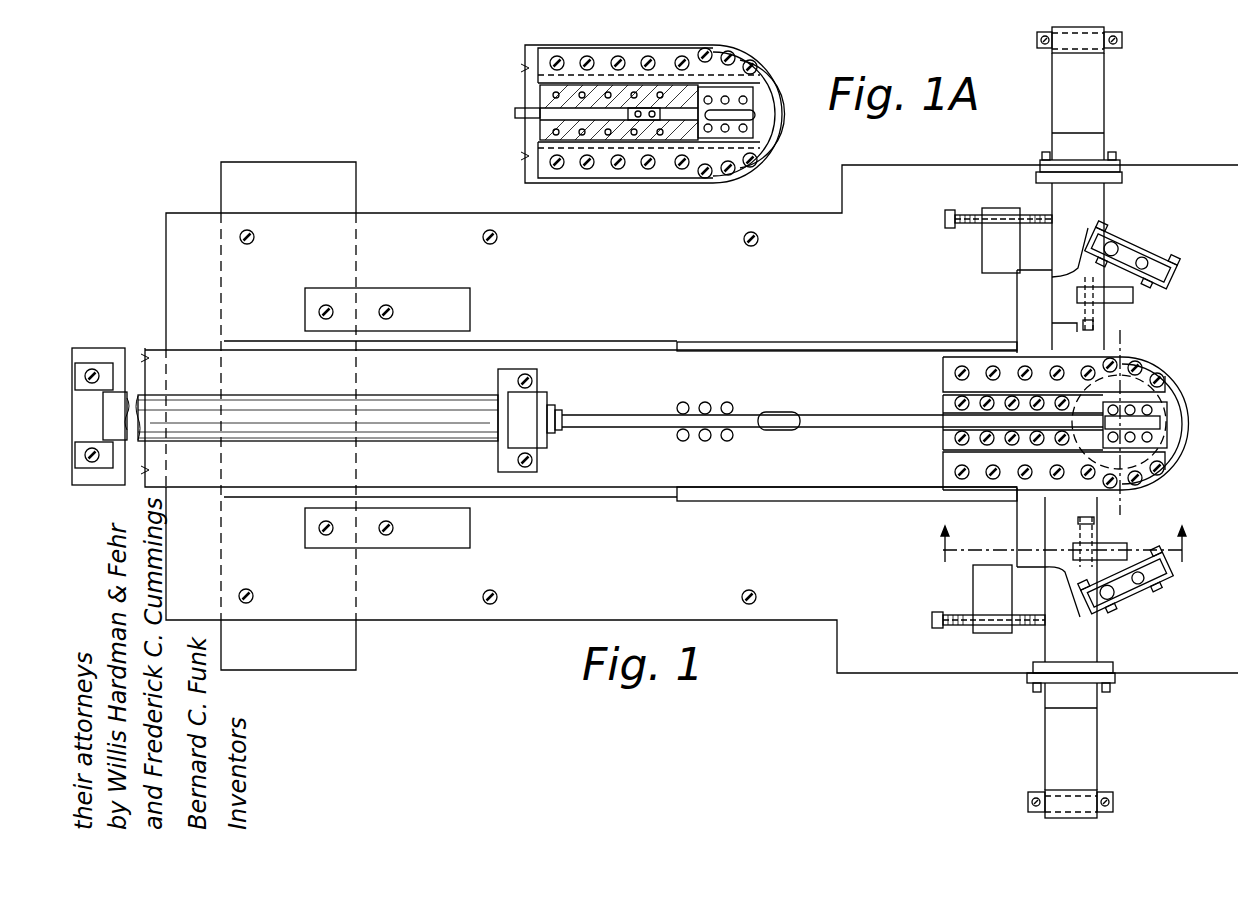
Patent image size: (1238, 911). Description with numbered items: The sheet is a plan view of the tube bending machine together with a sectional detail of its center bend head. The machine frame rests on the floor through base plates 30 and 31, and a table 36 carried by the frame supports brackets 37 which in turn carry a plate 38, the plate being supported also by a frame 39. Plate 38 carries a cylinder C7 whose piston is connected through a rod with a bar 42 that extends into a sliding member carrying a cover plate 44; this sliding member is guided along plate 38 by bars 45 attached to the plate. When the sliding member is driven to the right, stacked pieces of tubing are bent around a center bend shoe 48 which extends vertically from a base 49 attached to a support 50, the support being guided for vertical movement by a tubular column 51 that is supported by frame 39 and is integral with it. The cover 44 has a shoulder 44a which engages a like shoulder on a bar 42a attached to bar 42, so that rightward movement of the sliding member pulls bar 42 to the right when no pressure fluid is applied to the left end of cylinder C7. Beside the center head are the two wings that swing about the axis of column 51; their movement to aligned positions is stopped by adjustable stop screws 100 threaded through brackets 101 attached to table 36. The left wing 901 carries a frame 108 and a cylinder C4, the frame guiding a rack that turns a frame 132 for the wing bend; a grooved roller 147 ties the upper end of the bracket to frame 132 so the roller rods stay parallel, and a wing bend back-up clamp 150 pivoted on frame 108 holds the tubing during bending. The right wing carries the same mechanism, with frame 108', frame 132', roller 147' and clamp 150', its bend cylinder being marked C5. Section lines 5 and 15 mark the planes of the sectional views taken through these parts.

In FIG. 1, the base plate 30 is at (882, 673).
In FIG. 1, the base plate 31 is at (276, 162).
In FIG. 1, the table 36 is at (432, 213).
In FIG. 1, the brackets 37 is at (470, 310).
In FIG. 1, the plate 38 is at (600, 487).
In FIG. 1A, the plate 38 is at (776, 150).
In FIG. 1, the frame 39 is at (836, 342).
In FIG. 1, the bar 42 is at (858, 415).
In FIG. 1A, the bar 42 is at (514, 112).
In FIG. 1A, the bar 42a is at (713, 112).
In FIG. 1, the cover plate 44 is at (943, 425).
In FIG. 1A, the cover plate 44 is at (540, 130).
In FIG. 1A, the shoulder 44a is at (648, 105).
In FIG. 1, the bars 45 is at (943, 375).
In FIG. 1A, the bars 45 is at (612, 37).
In FIG. 1, the center bend shoe 48 is at (1186, 432).
In FIG. 1A, the center bend shoe 48 is at (760, 103).
In FIG. 1, the base 49 is at (1132, 407).
In FIG. 1A, the base 49 is at (765, 95).
In FIG. 1, the support 50 is at (1125, 398).
In FIG. 1A, the support 50 is at (770, 134).
In FIG. 1, the tubular column 51 is at (1175, 450).
In FIG. 1A, the tubular column 51 is at (772, 115).
In FIG. 1, the section line 5 is at (1166, 128).
In FIG. 1, the section line 15 is at (1079, 533).
In FIG. 1, the adjustable stop screws 100 is at (945, 228).
In FIG. 1, the brackets 101 is at (982, 262).
In FIG. 1, the frame 108 is at (1067, 603).
In FIG. 1, the frame 108' is at (1043, 248).
In FIG. 1, the frame 132 is at (1150, 582).
In FIG. 1, the frame 132' is at (1151, 257).
In FIG. 1, the grooved roller 147 is at (1075, 630).
In FIG. 1, the grooved roller 147' is at (1094, 223).
In FIG. 1, the wing bend back-up clamp 150 is at (1119, 540).
In FIG. 1, the wing bend back-up clamp 150' is at (1129, 303).
In FIG. 1, the left wing 901 is at (1052, 190).
In FIG. 1, the cylinder C4 is at (1045, 750).
In FIG. 1, the cylinder C5 is at (1052, 83).
In FIG. 1, the cylinder C7 is at (322, 388).